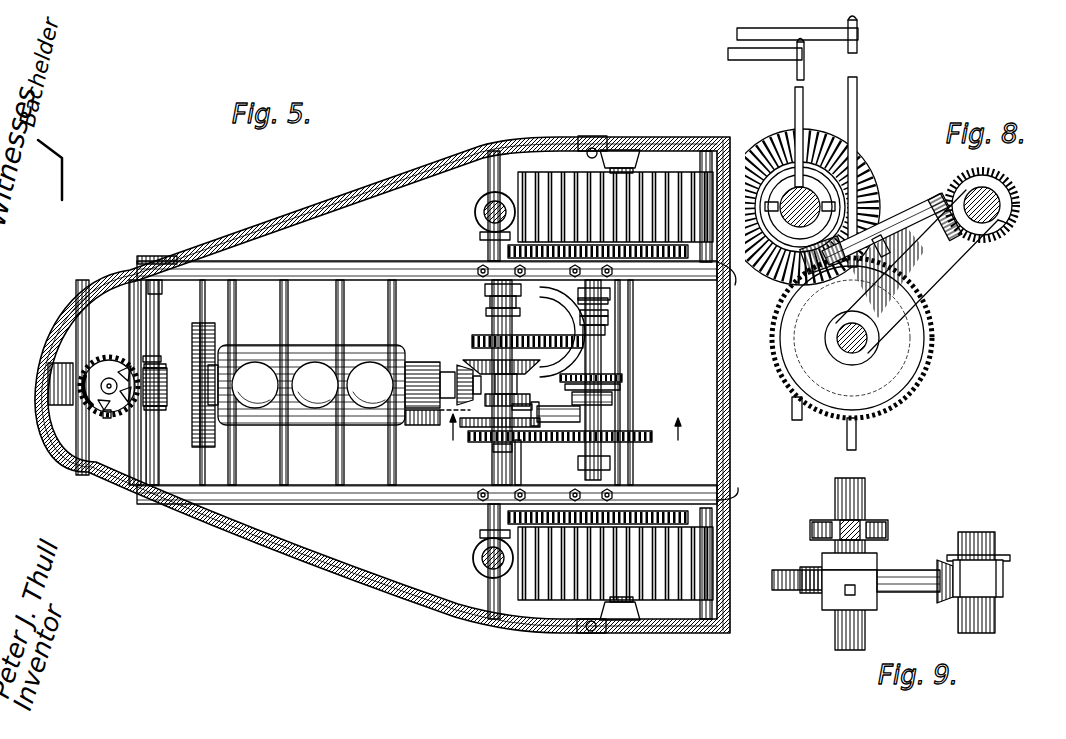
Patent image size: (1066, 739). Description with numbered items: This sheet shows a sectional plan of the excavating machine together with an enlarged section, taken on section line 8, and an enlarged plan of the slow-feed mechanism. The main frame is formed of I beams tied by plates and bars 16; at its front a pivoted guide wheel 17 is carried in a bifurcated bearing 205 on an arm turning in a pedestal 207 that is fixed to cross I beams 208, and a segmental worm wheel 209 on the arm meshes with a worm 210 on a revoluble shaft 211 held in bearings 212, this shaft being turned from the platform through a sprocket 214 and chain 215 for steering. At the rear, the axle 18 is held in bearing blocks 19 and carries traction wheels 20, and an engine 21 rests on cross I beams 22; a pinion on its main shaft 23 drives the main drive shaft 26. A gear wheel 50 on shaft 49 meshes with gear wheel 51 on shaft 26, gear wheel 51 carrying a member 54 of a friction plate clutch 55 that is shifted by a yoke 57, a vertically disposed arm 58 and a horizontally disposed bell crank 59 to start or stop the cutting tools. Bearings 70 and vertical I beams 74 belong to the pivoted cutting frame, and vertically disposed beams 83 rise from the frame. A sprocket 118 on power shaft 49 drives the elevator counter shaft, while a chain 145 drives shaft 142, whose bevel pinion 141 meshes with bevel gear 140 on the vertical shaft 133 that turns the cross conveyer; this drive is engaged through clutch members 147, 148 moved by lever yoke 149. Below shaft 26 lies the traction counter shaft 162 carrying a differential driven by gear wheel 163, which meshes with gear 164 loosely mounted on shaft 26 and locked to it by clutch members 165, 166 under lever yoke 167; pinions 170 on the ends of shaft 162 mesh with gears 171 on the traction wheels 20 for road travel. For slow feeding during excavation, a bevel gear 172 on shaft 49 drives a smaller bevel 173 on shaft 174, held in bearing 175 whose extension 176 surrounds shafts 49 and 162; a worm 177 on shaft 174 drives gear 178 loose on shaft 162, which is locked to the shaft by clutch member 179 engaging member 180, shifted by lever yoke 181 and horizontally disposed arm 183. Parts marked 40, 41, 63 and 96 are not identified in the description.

In FIG. 5, the section line 8 is at (565, 428).
In FIG. 5, the plates and bars 16 is at (294, 212).
In FIG. 5, the pivoted guide wheel 17 is at (36, 347).
In FIG. 5, the rear axle 18 is at (610, 314).
In FIG. 5, the bearing blocks 19 is at (620, 160).
In FIG. 5, the traction wheels 20 is at (545, 195).
In FIG. 5, the engine 21 is at (331, 385).
In FIG. 5, the cross I beams 22 is at (336, 305).
In FIG. 8, the main shaft of the engine 23 is at (870, 188).
In FIG. 5, the main drive shaft 26 is at (493, 450).
In FIG. 8, the main drive shaft 26 is at (803, 192).
In FIG. 5, the bevel pinion 40 is at (462, 363).
In FIG. 5, the shaft coupling 41 is at (470, 374).
In FIG. 5, the power shaft 49 is at (602, 355).
In FIG. 8, the power shaft 49 is at (973, 190).
In FIG. 9, the power shaft 49 is at (970, 532).
In FIG. 5, the gear wheel 50 is at (642, 436).
In FIG. 5, the gear wheel 51 is at (520, 452).
In FIG. 5, the clutch member 54 is at (548, 430).
In FIG. 5, the friction plate clutch 55 is at (470, 445).
In FIG. 5, the yoke 57 is at (493, 392).
In FIG. 8, the vertically disposed arm 58 is at (795, 103).
In FIG. 8, the bell crank 59 is at (745, 58).
In FIG. 5, the bolts 63 is at (478, 268).
In FIG. 5, the bearings 70 is at (589, 136).
In FIG. 5, the vertically disposed I beams 74 is at (598, 148).
In FIG. 5, the vertically disposed beams 83 is at (371, 261).
In FIG. 5, the gear 96 is at (622, 378).
In FIG. 5, the sprocket 118 is at (612, 400).
In FIG. 5, the shaft 133 is at (485, 212).
In FIG. 5, the bevel gear 140 is at (478, 204).
In FIG. 5, the bevel pinion 141 is at (480, 236).
In FIG. 5, the revoluble shaft 142 is at (488, 172).
In FIG. 5, the chain 145 is at (612, 294).
In FIG. 5, the clutch member 147 is at (580, 303).
In FIG. 5, the clutch member 148 is at (610, 322).
In FIG. 5, the lever yoke 149 is at (606, 333).
In FIG. 5, the traction counter shaft 162 is at (489, 462).
In FIG. 8, the traction counter shaft 162 is at (856, 352).
In FIG. 9, the traction counter shaft 162 is at (836, 636).
In FIG. 5, the gear wheel 163 is at (528, 332).
In FIG. 5, the gear 164 is at (492, 332).
In FIG. 5, the clutch member 165 is at (486, 322).
In FIG. 5, the clutch member 166 is at (488, 302).
In FIG. 5, the lever yoke 167 is at (498, 300).
In FIG. 5, the gear pinions 170 is at (522, 245).
In FIG. 5, the gears 171 is at (742, 381).
In FIG. 9, the bevel gear 172 is at (950, 555).
In FIG. 8, the bevel 173 is at (940, 200).
In FIG. 9, the bevel 173 is at (937, 566).
In FIG. 8, the shaft 174 is at (890, 230).
In FIG. 9, the shaft 174 is at (877, 606).
In FIG. 8, the bearing 175 is at (945, 262).
In FIG. 9, the bearing 175 is at (900, 575).
In FIG. 8, the extension 176 is at (940, 300).
In FIG. 9, the extension 176 is at (1003, 586).
In FIG. 8, the worm 177 is at (822, 305).
In FIG. 9, the worm 177 is at (806, 565).
In FIG. 8, the gear 178 is at (841, 344).
In FIG. 9, the gear 178 is at (788, 595).
In FIG. 9, the clutch member 179 is at (825, 556).
In FIG. 9, the clutch member 180 is at (880, 525).
In FIG. 8, the lever yoke 181 is at (858, 91).
In FIG. 9, the lever yoke 181 is at (866, 521).
In FIG. 8, the horizontally disposed arm 183 is at (790, 34).
In FIG. 5, the bifurcated bearing 205 is at (106, 357).
In FIG. 5, the pedestal 207 is at (422, 425).
In FIG. 5, the cross I beams 208 is at (84, 292).
In FIG. 5, the segmental worm wheel 209 is at (111, 418).
In FIG. 5, the worm 210 is at (166, 392).
In FIG. 5, the revoluble shaft 211 is at (159, 312).
In FIG. 5, the bearings 212 is at (140, 268).
In FIG. 5, the sprocket 214 is at (160, 364).
In FIG. 5, the chain 215 is at (157, 261).